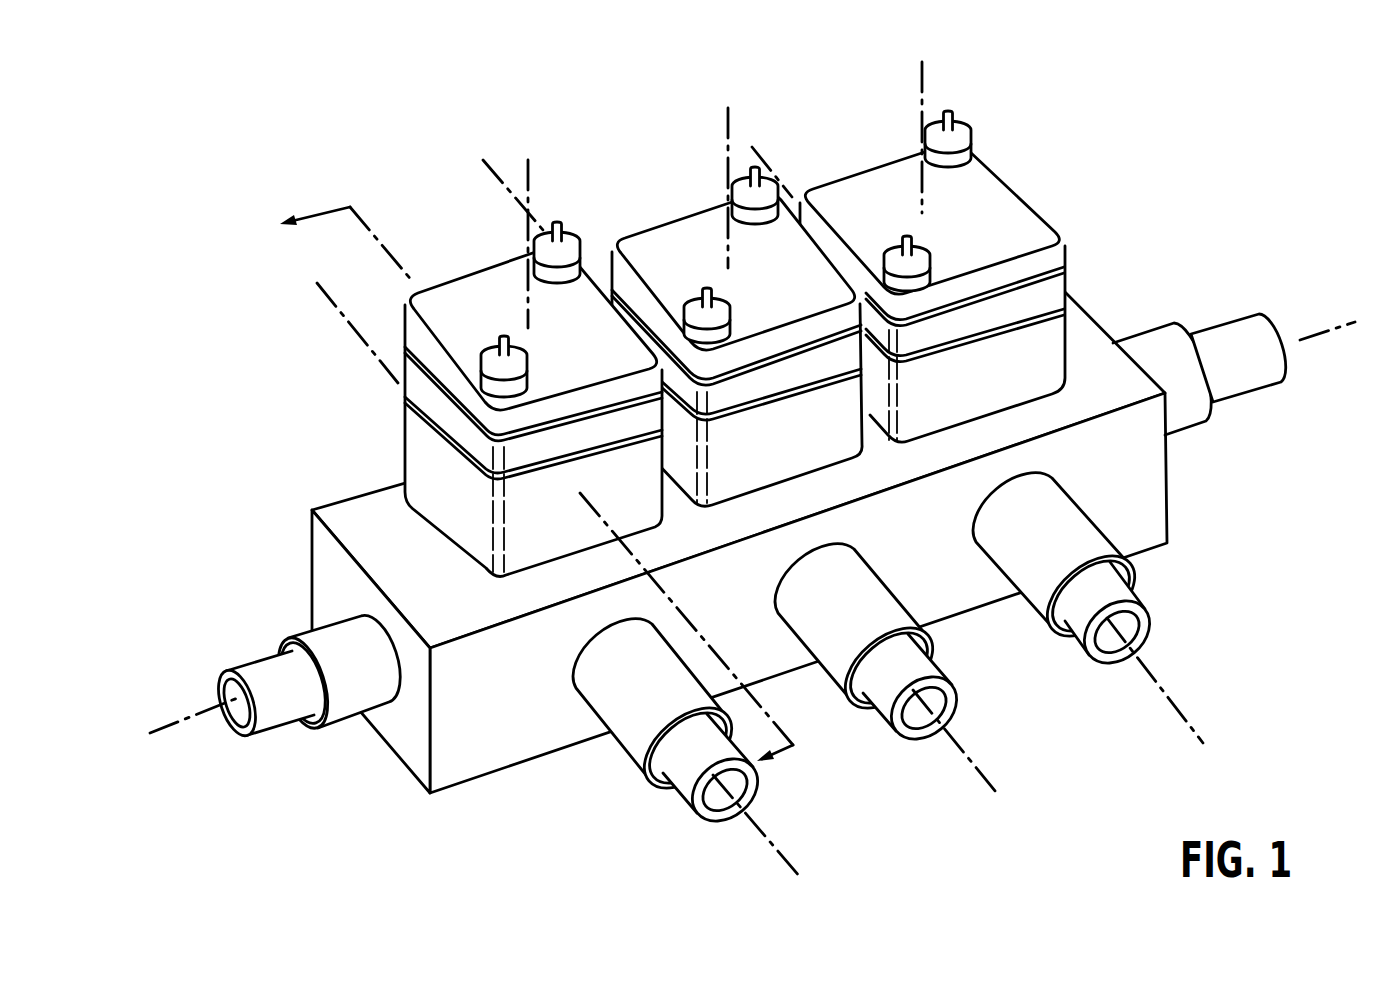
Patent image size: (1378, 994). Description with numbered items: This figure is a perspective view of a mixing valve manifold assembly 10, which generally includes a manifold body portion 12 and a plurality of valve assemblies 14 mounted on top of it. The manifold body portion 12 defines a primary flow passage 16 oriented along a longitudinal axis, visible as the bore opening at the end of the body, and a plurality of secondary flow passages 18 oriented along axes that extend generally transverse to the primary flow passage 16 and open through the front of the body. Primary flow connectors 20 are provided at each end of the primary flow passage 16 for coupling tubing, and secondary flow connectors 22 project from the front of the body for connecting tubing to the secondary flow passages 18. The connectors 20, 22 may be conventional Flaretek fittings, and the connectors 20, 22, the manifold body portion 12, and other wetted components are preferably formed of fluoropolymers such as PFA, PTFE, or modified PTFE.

The mixing valve manifold assembly 10 is at (413, 247).
The manifold body portion 12 is at (512, 748).
The valve assemblies 14 is at (462, 286).
The primary flow passage 16 is at (229, 697).
The secondary flow passages 18 is at (716, 800).
The primary flow connectors 20 is at (313, 727).
The secondary flow connectors 22 is at (644, 775).